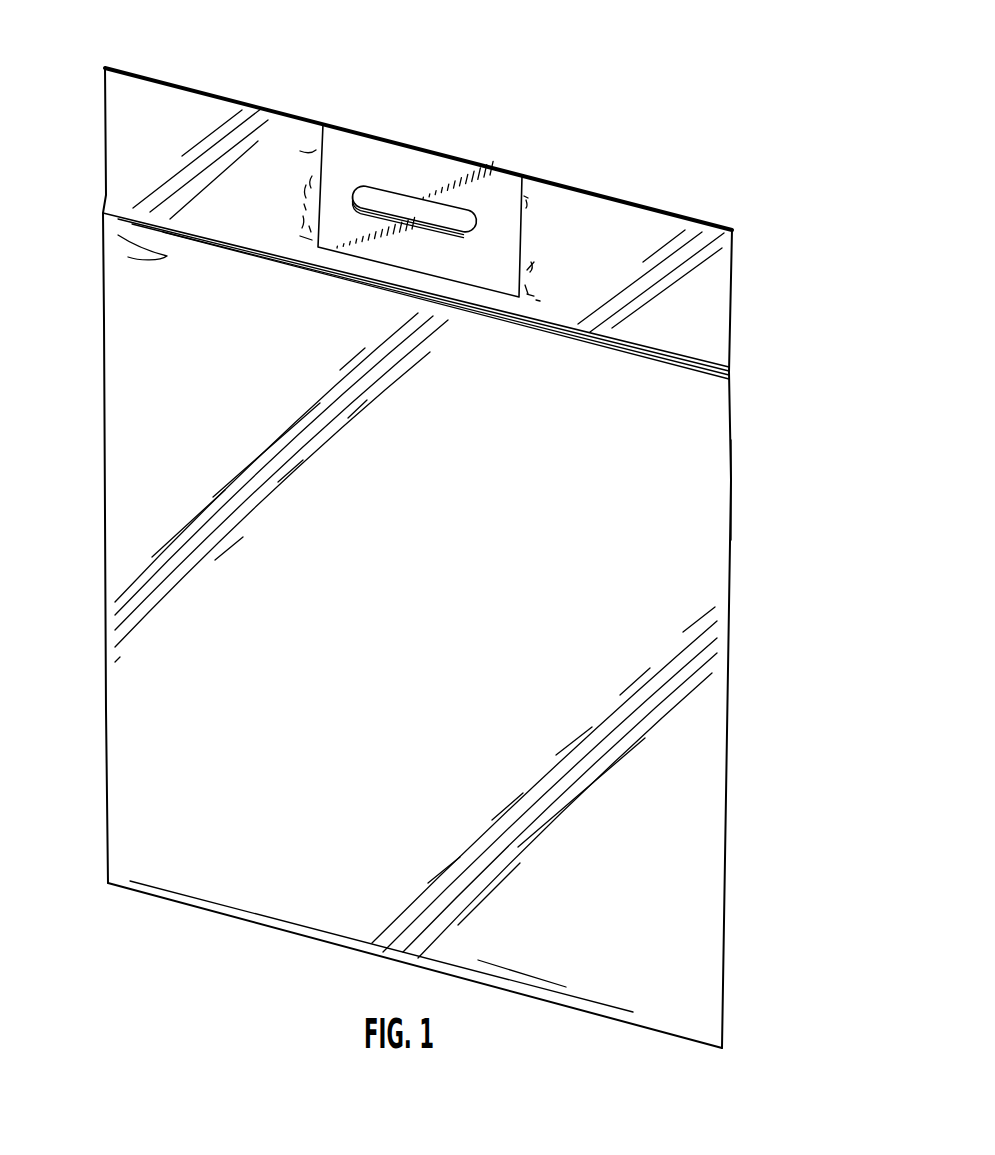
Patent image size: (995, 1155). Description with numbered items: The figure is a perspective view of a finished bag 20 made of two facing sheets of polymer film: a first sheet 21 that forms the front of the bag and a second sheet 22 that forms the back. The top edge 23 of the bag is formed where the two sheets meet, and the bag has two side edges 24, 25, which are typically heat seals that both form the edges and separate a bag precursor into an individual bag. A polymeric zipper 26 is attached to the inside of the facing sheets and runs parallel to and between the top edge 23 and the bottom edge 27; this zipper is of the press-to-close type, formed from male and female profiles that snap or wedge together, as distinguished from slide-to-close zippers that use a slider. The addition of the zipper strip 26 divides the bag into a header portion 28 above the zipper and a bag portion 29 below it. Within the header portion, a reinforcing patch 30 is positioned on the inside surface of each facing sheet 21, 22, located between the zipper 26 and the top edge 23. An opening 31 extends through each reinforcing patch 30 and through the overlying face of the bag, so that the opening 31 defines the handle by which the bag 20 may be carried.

The bag 20 is at (650, 90).
The first sheet 21 is at (458, 590).
The second sheet 22 is at (747, 489).
The top edge 23 is at (280, 112).
The side edge 24 is at (103, 514).
The side edge 25 is at (733, 769).
The zipper 26 is at (593, 350).
The bottom edge 27 is at (221, 908).
The header portion 28 is at (167, 143).
The bag portion 29 is at (164, 436).
The reinforcing patch 30 is at (497, 196).
The opening 31 is at (388, 201).